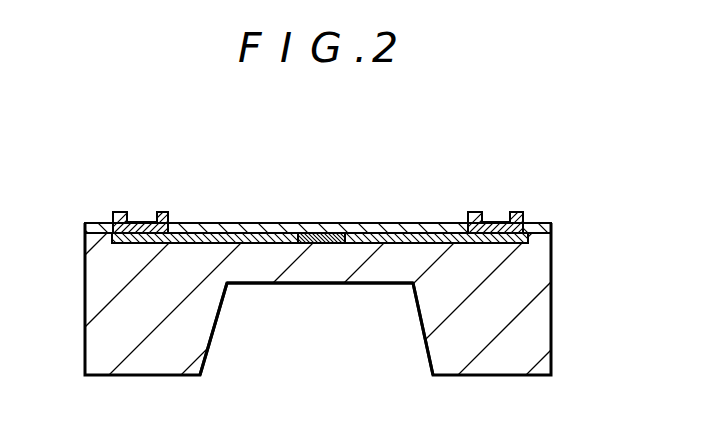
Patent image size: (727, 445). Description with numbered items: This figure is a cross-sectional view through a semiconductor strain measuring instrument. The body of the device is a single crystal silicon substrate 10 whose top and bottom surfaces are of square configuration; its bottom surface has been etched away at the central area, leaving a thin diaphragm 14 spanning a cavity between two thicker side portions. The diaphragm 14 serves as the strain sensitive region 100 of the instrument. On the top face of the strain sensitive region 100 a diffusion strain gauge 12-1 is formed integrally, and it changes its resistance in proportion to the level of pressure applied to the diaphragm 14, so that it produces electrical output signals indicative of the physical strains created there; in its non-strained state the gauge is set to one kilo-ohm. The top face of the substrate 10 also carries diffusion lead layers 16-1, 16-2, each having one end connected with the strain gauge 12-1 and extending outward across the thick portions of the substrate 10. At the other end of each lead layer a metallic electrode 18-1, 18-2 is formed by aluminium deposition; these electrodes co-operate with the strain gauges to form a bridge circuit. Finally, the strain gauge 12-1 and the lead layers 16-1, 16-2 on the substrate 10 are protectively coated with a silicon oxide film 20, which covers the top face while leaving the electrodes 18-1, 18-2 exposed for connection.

The single crystal silicon substrate 10 is at (551, 277).
The diaphragm 14 is at (263, 273).
The strain sensitive region 100 is at (360, 273).
The silicon oxide film 20 is at (551, 226).
The metallic electrode 18-1 is at (137, 221).
The metallic electrode 18-2 is at (498, 221).
The diffusion lead layer 16-1 is at (244, 238).
The diffusion strain gauge 12-1 is at (322, 238).
The diffusion lead layer 16-2 is at (414, 238).